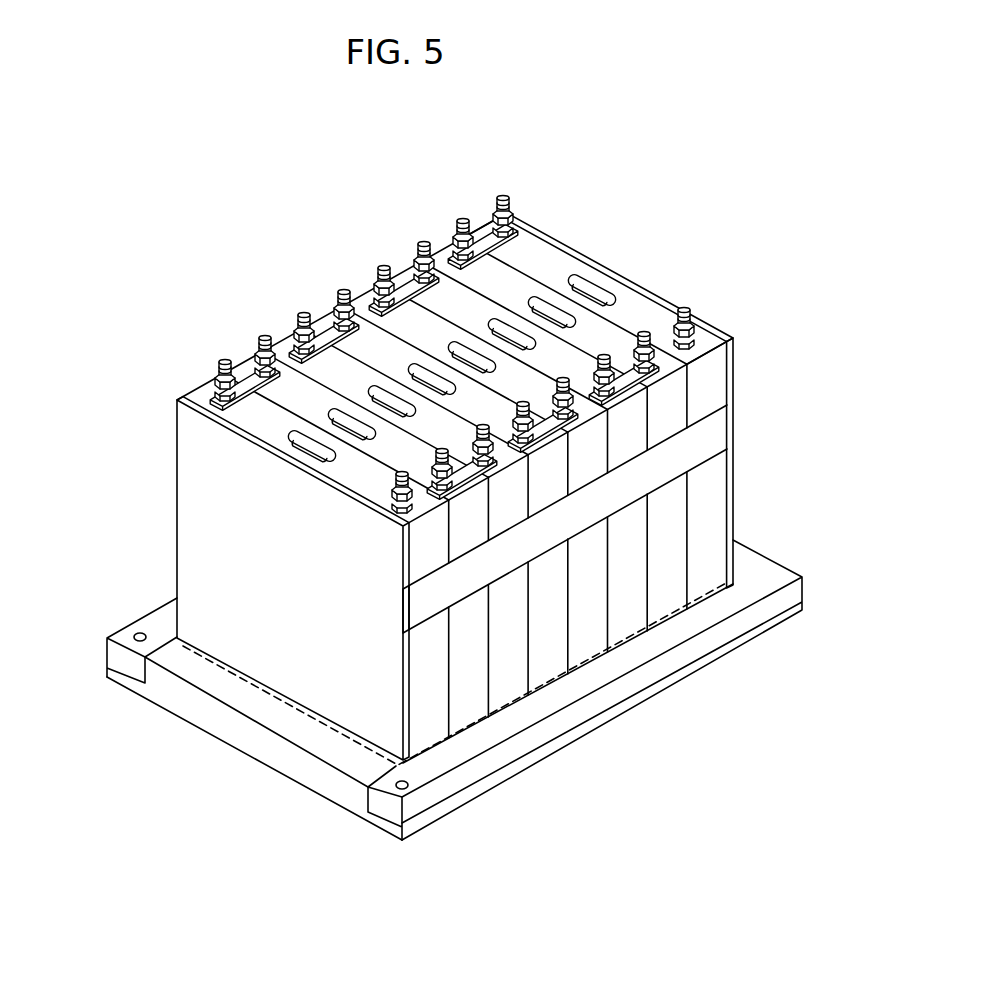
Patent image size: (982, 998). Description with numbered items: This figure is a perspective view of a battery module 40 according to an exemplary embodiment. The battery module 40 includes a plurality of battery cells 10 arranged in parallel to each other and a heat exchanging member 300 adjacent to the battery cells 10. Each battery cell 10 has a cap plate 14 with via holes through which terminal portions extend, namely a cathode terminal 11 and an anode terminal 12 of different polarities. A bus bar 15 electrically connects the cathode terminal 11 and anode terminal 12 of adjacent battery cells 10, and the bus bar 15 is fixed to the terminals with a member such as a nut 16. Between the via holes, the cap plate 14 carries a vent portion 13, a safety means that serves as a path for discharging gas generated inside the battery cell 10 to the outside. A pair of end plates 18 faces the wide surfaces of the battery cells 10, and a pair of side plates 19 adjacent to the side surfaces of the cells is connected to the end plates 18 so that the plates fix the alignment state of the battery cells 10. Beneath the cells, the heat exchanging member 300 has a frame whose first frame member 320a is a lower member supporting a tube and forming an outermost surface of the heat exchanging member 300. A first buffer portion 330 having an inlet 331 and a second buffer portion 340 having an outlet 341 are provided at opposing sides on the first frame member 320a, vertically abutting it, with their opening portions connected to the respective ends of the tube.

The battery module 40 is at (424, 499).
The battery cell 10 is at (482, 451).
The cathode terminal 11 is at (505, 199).
The anode terminal 12 is at (684, 309).
The vent portion 13 is at (586, 290).
The cap plate 14 is at (645, 312).
The bus bar 15 is at (250, 379).
The nut 16 is at (296, 338).
The end plate 18 is at (190, 522).
The side plate 19 is at (723, 435).
The heat exchanging member 300 is at (413, 704).
The first frame member 320a is at (200, 720).
The first buffer portion 330 is at (106, 659).
The inlet 331 is at (137, 633).
The second buffer portion 340 is at (555, 740).
The outlet 341 is at (410, 792).